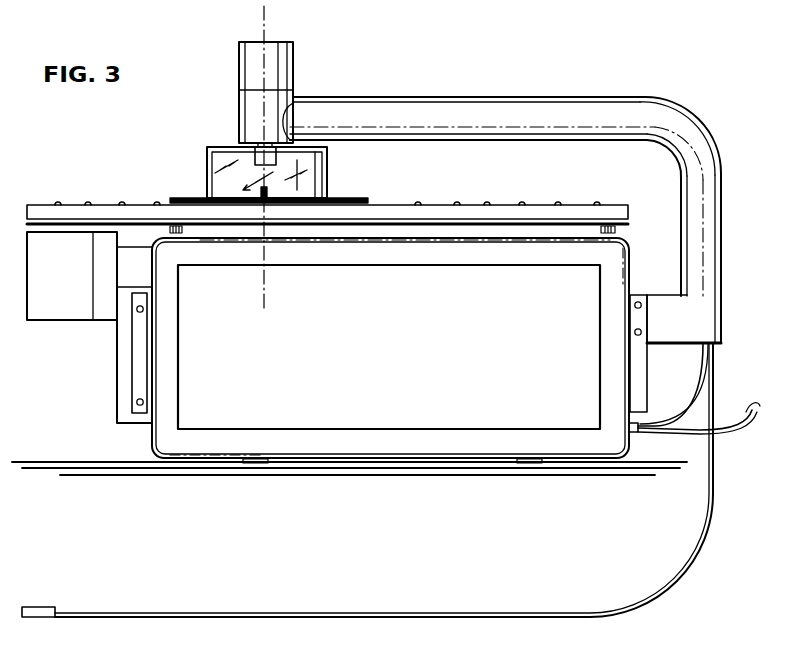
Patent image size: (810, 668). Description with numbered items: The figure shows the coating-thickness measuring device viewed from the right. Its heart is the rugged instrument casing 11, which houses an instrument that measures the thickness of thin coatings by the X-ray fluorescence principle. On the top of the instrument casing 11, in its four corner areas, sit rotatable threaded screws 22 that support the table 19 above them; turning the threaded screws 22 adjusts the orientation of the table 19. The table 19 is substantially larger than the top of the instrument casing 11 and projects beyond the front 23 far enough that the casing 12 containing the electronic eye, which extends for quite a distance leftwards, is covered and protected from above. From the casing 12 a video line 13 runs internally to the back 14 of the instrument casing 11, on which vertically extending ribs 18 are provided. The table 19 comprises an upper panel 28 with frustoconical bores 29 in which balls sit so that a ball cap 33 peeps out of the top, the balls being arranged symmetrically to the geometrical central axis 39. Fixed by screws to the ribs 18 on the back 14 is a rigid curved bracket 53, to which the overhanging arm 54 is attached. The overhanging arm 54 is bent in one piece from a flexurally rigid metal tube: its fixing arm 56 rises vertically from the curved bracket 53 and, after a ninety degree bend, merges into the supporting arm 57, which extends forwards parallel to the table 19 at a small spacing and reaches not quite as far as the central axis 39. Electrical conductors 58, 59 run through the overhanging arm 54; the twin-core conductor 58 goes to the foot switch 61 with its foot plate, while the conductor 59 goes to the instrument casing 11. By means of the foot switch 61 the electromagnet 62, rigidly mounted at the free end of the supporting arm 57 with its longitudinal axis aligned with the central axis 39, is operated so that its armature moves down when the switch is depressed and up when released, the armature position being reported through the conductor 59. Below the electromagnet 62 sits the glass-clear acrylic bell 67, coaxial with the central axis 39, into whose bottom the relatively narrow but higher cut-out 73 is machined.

The instrument casing 11 is at (392, 442).
The casing 12 is at (62, 302).
The video line 13 is at (727, 433).
The back 14 is at (630, 270).
The ribs 18 is at (632, 378).
The table 19 is at (75, 204).
The threaded screws 22 is at (178, 229).
The front 23 is at (150, 440).
The upper panel 28 is at (498, 227).
The frustoconical bores 29 is at (494, 233).
The ball cap 33 is at (455, 204).
The geometrical central axis 39 is at (266, 22).
The curved bracket 53 is at (672, 344).
The overhanging arm 54 is at (690, 108).
The fixing arm 56 is at (697, 265).
The supporting arm 57 is at (480, 97).
The electrical conductor 58 is at (520, 610).
The electrical conductor 59 is at (690, 412).
The foot switch 61 is at (55, 599).
The electromagnet 62 is at (294, 62).
The bell 67 is at (307, 192).
The cut-out 73 is at (256, 197).